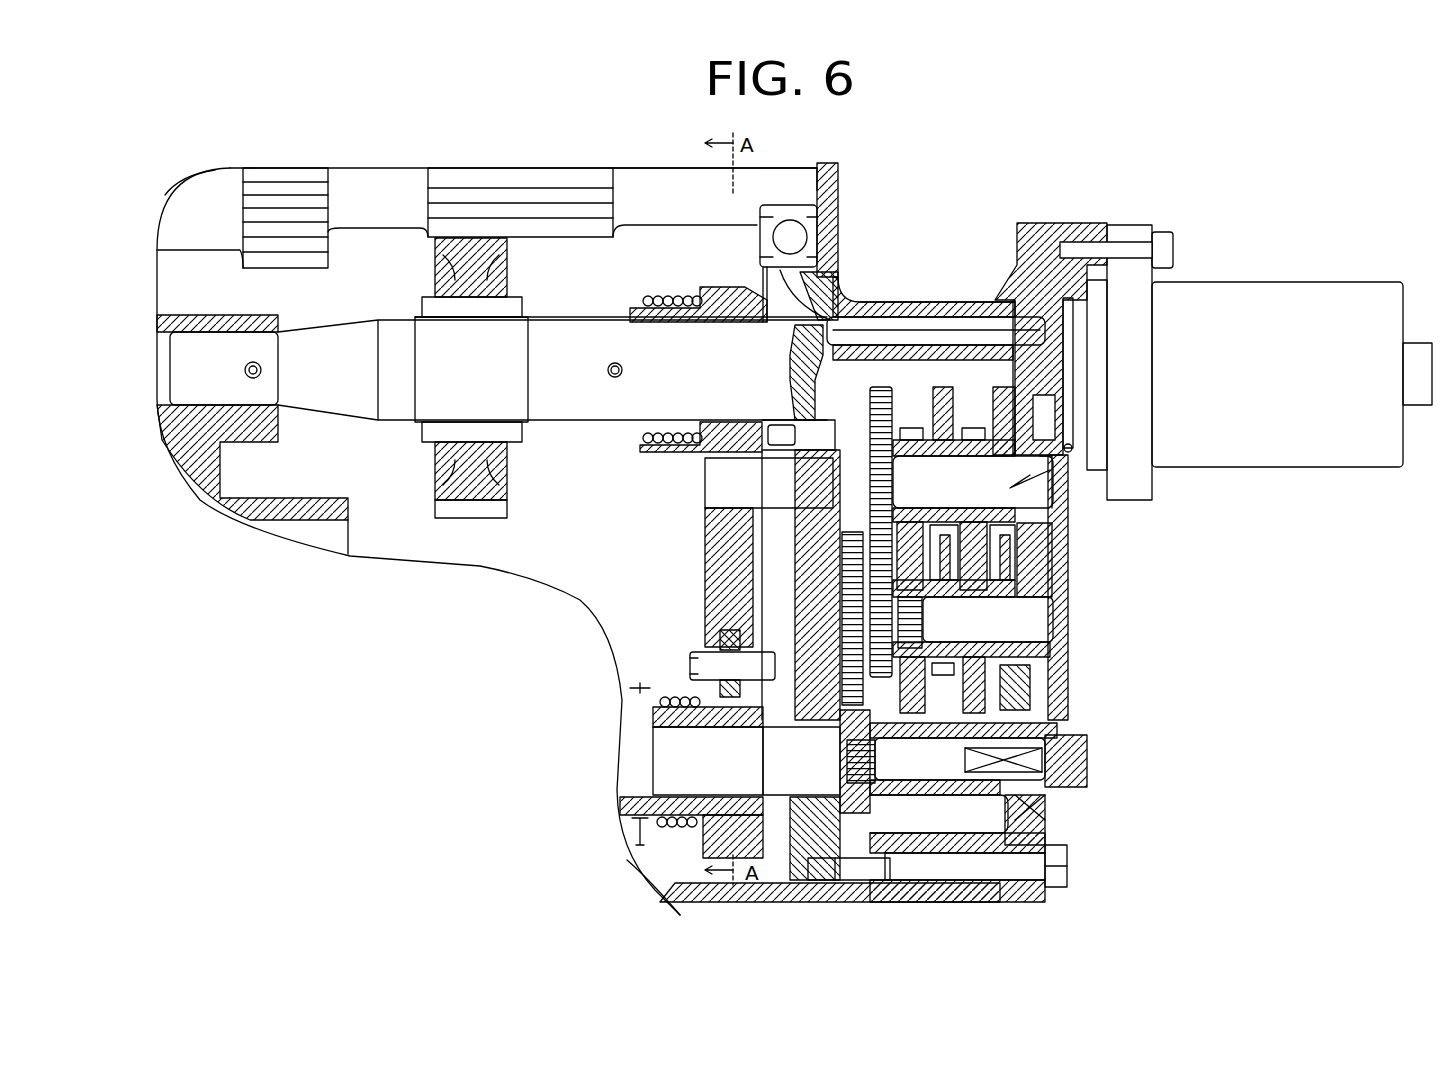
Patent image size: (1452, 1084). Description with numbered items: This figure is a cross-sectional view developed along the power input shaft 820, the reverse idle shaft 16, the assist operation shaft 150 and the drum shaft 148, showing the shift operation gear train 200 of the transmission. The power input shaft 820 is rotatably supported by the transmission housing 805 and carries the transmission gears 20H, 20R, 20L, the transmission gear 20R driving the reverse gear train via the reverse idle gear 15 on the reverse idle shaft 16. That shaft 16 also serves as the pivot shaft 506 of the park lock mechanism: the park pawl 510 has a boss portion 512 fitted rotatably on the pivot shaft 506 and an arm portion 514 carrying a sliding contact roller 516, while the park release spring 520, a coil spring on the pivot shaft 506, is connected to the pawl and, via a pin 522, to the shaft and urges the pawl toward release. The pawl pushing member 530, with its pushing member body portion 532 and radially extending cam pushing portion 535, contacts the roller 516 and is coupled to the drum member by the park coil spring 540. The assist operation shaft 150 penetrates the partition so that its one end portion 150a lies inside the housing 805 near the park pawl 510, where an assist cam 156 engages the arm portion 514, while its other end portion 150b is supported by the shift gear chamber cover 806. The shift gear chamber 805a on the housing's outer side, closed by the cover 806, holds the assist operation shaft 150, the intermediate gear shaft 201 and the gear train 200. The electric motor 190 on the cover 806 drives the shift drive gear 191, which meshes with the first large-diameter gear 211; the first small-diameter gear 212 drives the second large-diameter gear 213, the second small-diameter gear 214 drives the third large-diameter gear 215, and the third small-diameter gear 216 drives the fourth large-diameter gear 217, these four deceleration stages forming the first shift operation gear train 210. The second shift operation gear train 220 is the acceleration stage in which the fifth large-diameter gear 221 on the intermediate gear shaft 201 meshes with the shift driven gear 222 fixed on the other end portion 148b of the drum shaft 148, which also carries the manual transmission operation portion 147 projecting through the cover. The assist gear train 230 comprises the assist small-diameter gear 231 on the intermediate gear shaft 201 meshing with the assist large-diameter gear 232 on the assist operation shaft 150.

The reverse idle gear 15 is at (440, 493).
The reverse idle shaft 16 is at (590, 335).
The pivot shaft 506 is at (621, 287).
The transmission gear 20H is at (262, 165).
The transmission gear 20R is at (447, 180).
The transmission gear 20L is at (598, 178).
The manual transmission operation portion 147 is at (1090, 770).
The drum shaft 148 is at (805, 785).
The other end portion 148b is at (1000, 795).
The assist operation shaft 150 is at (1045, 525).
The one end portion 150a is at (760, 418).
The other end portion 150b is at (1050, 485).
The assist cam 156 is at (703, 497).
The electric motor 190 is at (1313, 457).
The shift drive gear 191 is at (1007, 375).
The shift operation gear train 200 is at (1082, 650).
The intermediate gear shaft 201 is at (1057, 630).
The first shift operation gear train 210 is at (963, 372).
The first large-diameter gear 211 is at (1015, 562).
The first small-diameter gear 212 is at (977, 428).
The second large-diameter gear 213 is at (1045, 685).
The second small-diameter gear 214 is at (910, 745).
The third large-diameter gear 215 is at (940, 388).
The third small-diameter gear 216 is at (913, 428).
The fourth large-diameter gear 217 is at (948, 806).
The second shift operation gear train 220 is at (853, 825).
The fifth large-diameter gear 221 is at (843, 678).
The shift driven gear 222 is at (838, 818).
The assist gear train 230 is at (880, 372).
The assist small-diameter gear 231 is at (878, 695).
The assist large-diameter gear 232 is at (870, 415).
The park pawl 510 is at (738, 274).
The boss portion 512 is at (632, 450).
The arm portion 514 is at (702, 550).
The sliding contact roller 516 is at (725, 632).
The park release spring 520 is at (688, 296).
The pin 522 is at (612, 378).
The pawl pushing member 530 is at (692, 860).
The pushing member body portion 532 is at (620, 805).
The cam pushing portion 535 is at (695, 850).
The park coil spring 540 is at (665, 695).
The transmission housing 805 is at (207, 465).
The shift gear chamber 805a is at (990, 827).
The shift gear chamber cover 806 is at (915, 302).
The power input shaft 820 is at (207, 195).